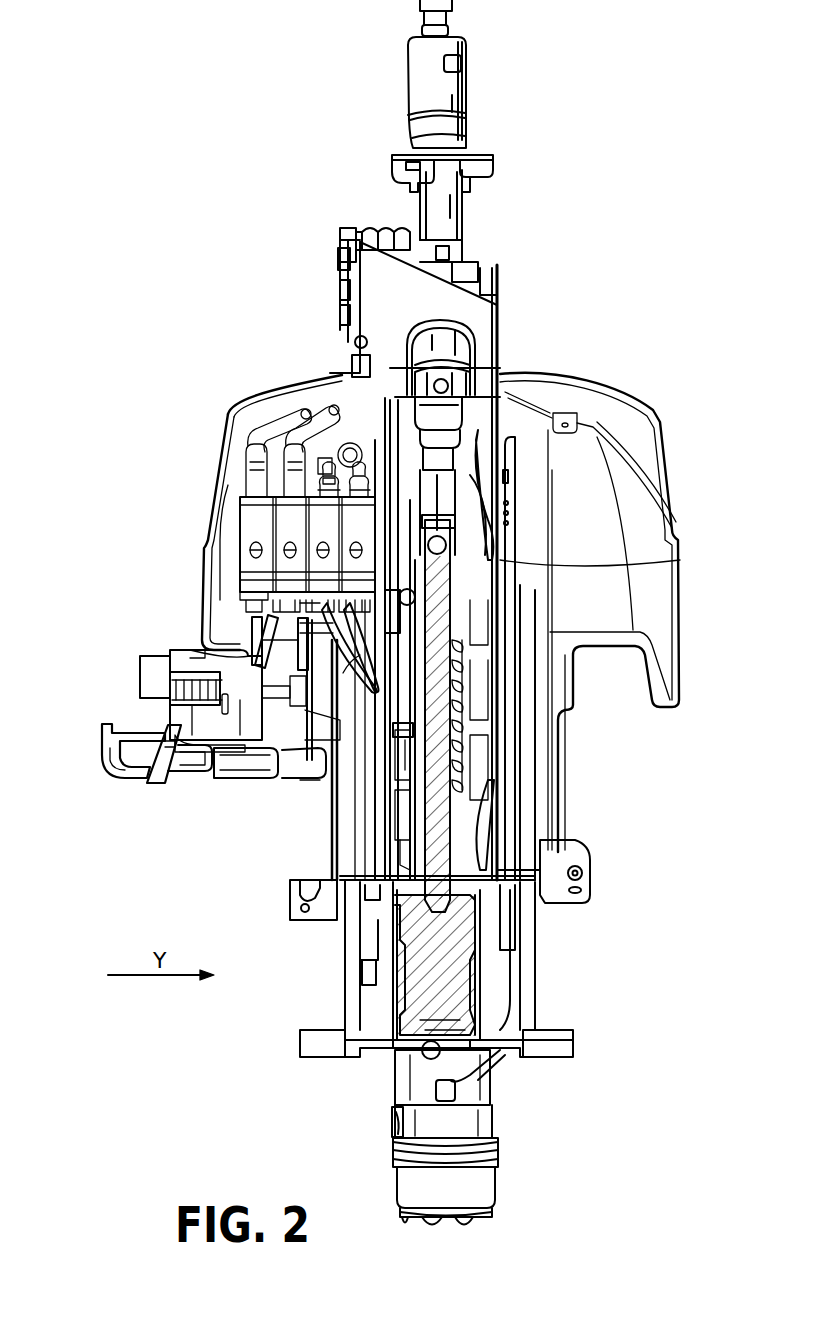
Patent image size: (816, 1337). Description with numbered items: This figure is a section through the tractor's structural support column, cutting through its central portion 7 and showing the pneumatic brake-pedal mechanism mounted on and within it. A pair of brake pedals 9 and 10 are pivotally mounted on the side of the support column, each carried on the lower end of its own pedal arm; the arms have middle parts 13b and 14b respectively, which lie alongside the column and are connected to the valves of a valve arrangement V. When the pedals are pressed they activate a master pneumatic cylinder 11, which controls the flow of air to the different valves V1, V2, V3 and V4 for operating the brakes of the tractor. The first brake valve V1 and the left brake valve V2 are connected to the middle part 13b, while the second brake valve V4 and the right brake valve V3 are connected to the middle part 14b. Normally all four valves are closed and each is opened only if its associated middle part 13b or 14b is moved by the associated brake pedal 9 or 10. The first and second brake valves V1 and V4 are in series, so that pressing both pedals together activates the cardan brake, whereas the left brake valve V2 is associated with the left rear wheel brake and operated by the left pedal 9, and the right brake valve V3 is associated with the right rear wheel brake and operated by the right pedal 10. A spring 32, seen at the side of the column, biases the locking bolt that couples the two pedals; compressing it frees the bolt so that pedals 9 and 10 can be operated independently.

The central portion 7 is at (505, 558).
The valve arrangement V is at (234, 531).
The first brake valve V1 is at (357, 515).
The left brake valve V2 is at (322, 515).
The right brake valve V3 is at (293, 515).
The second brake valve V4 is at (260, 515).
The middle part of pedal arm 14b is at (262, 640).
The spring 32 is at (180, 694).
The brake pedal 10 is at (141, 792).
The brake pedal 9 is at (250, 772).
The middle part of pedal arm 13b is at (305, 772).
The master pneumatic cylinder 11 is at (455, 957).